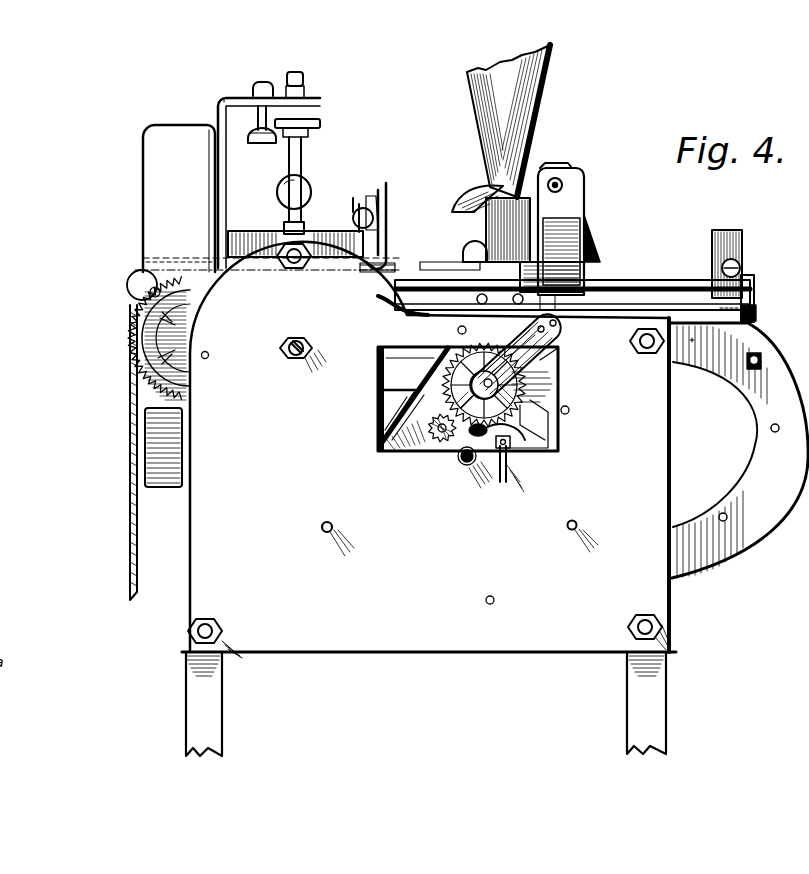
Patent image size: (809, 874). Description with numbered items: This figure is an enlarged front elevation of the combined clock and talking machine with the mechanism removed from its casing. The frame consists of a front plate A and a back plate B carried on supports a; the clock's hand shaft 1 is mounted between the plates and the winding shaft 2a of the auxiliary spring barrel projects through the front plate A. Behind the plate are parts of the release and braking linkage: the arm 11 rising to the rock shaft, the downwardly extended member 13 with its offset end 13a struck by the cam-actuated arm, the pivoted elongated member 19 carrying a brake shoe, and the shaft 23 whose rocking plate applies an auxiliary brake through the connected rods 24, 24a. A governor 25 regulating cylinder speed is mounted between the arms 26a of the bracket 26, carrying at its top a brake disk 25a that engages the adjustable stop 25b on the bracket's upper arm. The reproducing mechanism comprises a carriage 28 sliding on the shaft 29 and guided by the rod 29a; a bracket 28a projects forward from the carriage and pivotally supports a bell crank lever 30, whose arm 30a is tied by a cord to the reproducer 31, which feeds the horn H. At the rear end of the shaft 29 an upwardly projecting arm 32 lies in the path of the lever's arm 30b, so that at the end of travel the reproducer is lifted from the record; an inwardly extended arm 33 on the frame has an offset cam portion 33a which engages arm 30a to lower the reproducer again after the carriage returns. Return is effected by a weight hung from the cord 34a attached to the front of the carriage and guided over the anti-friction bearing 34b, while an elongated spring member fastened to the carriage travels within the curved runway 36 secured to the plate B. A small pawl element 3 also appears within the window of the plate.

The front plate A is at (429, 450).
The supports a is at (203, 720).
The back plate B is at (408, 450).
The horn H is at (525, 102).
The hand shaft 1 is at (460, 470).
The winding shaft 2a is at (327, 522).
The pawl arm 3 is at (522, 403).
The arm 11 is at (404, 417).
The downwardly extended member 13 is at (455, 398).
The offset end 13a is at (430, 426).
The elongated member 19 is at (405, 376).
The shaft 23 is at (292, 268).
The rod 24 is at (326, 233).
The rod 24a is at (380, 258).
The governor 25 is at (300, 185).
The brake disk 25a is at (322, 128).
The adjustable stop 25b is at (250, 145).
The bracket 26 is at (216, 206).
The arms of bracket 26a is at (233, 98).
The carriage 28 is at (584, 272).
The bracket 28a is at (582, 215).
The shaft 29 is at (758, 316).
The rod 29a is at (666, 276).
The bell crank lever 30 is at (568, 163).
The arm of bell crank lever 30a is at (477, 192).
The arm of bell crank lever 30b is at (598, 243).
The reproducer 31 is at (478, 250).
The upwardly projecting arm 32 is at (712, 245).
The inwardly extended arm 33 is at (250, 241).
The offset cam portion 33a is at (380, 190).
The cord 34a is at (447, 258).
The anti-friction bearing 34b is at (128, 292).
The curved runway 36 is at (739, 450).